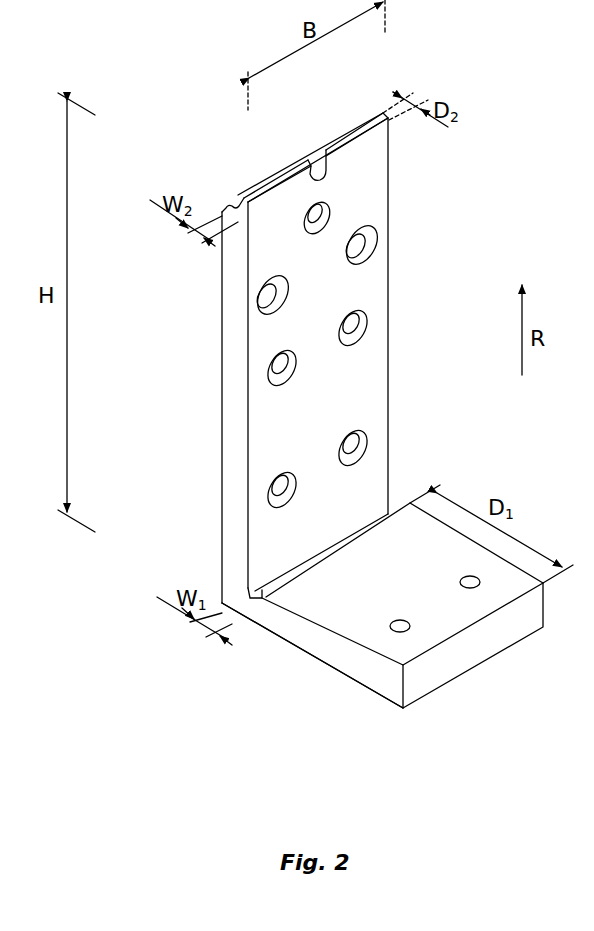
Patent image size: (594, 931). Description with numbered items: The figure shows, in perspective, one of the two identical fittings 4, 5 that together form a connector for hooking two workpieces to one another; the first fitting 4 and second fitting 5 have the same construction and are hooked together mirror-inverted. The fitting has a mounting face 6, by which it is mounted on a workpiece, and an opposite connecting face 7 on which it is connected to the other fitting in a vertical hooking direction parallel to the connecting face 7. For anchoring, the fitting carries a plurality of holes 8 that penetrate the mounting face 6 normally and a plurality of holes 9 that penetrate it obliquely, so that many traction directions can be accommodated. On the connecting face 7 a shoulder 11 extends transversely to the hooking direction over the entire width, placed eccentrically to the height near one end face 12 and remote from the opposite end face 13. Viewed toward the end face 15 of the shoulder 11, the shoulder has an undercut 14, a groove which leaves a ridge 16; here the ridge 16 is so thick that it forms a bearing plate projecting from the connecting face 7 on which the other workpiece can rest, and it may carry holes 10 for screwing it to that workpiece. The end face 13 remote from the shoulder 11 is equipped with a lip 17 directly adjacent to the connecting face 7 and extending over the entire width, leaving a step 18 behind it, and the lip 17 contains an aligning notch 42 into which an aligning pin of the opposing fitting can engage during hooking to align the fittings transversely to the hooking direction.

The first fitting 4 is at (150, 754).
The second fitting 5 is at (188, 707).
The mounting face 6 is at (222, 392).
The connecting face 7 is at (372, 288).
The holes 8 is at (325, 206).
The holes 9 is at (352, 256).
The holes 10 is at (460, 582).
The shoulder 11 is at (477, 652).
The end face 12 is at (443, 690).
The end face 13 is at (360, 131).
The undercut 14 is at (245, 586).
The end face of the shoulder 15 is at (383, 582).
The ridge 16 is at (298, 613).
The lip 17 is at (282, 185).
The step 18 is at (228, 205).
The aligning notch 42 is at (312, 162).